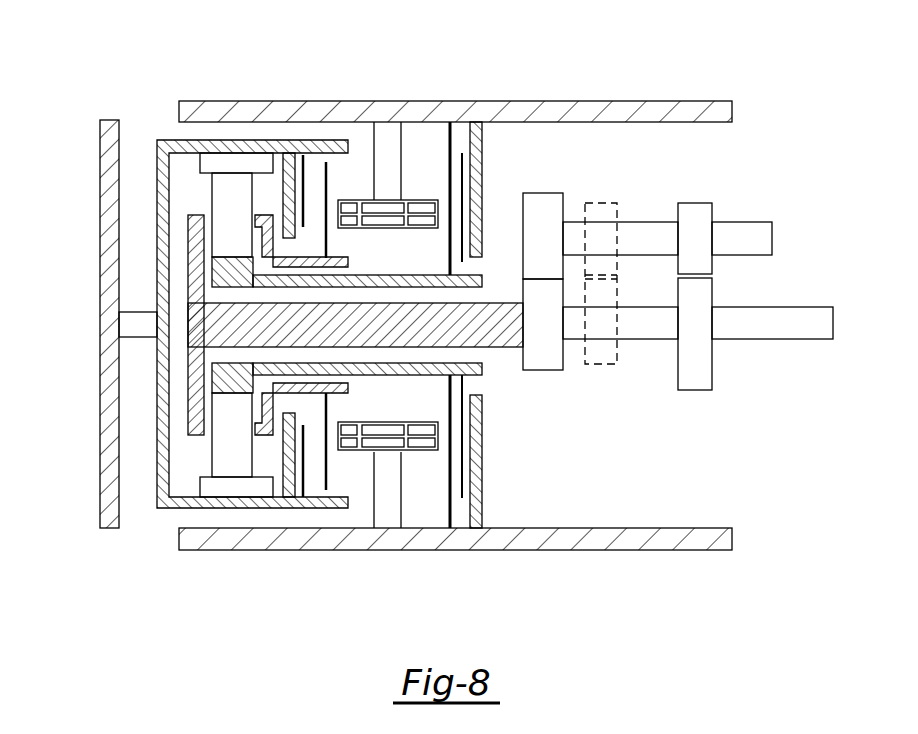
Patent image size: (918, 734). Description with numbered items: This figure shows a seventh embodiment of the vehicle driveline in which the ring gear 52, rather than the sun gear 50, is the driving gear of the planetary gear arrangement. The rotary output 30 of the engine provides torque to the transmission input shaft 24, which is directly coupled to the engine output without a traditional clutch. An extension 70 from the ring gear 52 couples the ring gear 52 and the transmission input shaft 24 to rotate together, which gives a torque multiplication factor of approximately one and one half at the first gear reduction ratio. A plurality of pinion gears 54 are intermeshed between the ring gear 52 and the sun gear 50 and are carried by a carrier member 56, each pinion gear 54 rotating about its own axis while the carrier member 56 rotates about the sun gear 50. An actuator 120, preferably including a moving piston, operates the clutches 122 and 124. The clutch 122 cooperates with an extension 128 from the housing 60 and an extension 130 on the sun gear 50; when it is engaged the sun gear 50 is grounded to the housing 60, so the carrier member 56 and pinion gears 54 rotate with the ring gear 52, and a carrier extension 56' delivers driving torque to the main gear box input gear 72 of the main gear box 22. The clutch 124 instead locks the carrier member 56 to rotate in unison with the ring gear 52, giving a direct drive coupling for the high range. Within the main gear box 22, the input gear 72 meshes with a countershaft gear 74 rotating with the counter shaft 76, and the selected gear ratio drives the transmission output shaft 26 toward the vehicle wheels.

The main gear box 22 is at (642, 186).
The transmission input shaft 24 is at (130, 327).
The transmission output shaft 26 is at (768, 310).
The rotary output of the engine 30 is at (96, 215).
The sun gear 50 is at (222, 297).
The ring gear 52 is at (235, 160).
The pinion gears 54 is at (246, 215).
The carrier member 56 is at (164, 325).
The carrier extension 56' is at (352, 325).
The housing 60 is at (347, 551).
The extension 70 is at (170, 140).
The main gear box input gear 72 is at (556, 336).
The countershaft gear 74 is at (556, 240).
The counter shaft 76 is at (738, 232).
The actuator 120 is at (382, 236).
The clutch 122 is at (440, 182).
The clutch 124 is at (338, 183).
The extension from the housing 128 is at (482, 158).
The extension on the sun gear 130 is at (482, 278).